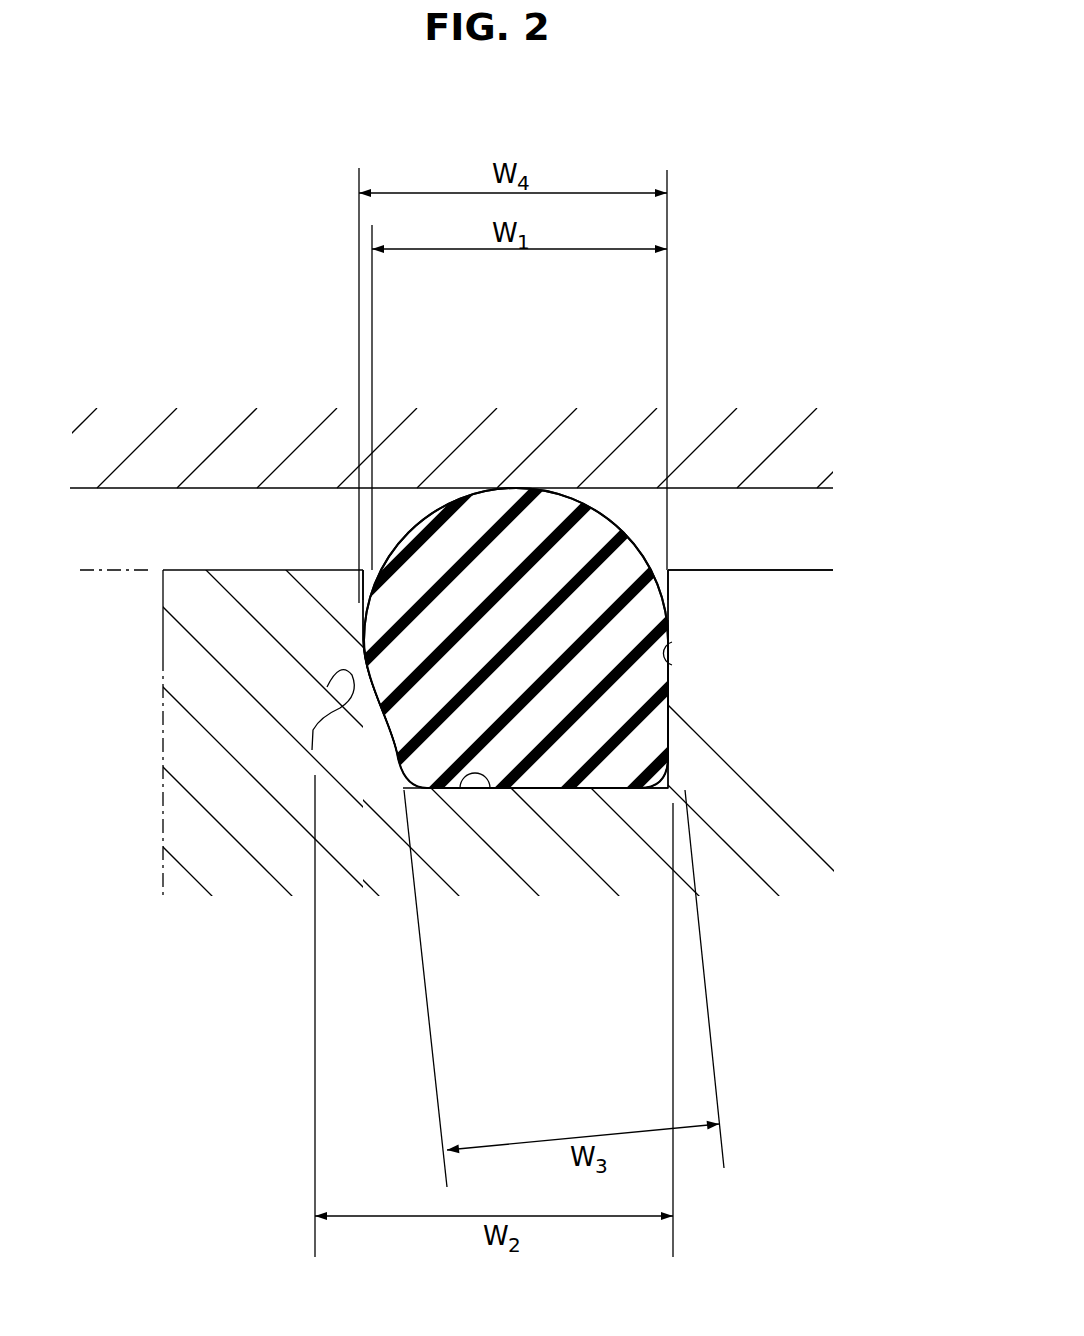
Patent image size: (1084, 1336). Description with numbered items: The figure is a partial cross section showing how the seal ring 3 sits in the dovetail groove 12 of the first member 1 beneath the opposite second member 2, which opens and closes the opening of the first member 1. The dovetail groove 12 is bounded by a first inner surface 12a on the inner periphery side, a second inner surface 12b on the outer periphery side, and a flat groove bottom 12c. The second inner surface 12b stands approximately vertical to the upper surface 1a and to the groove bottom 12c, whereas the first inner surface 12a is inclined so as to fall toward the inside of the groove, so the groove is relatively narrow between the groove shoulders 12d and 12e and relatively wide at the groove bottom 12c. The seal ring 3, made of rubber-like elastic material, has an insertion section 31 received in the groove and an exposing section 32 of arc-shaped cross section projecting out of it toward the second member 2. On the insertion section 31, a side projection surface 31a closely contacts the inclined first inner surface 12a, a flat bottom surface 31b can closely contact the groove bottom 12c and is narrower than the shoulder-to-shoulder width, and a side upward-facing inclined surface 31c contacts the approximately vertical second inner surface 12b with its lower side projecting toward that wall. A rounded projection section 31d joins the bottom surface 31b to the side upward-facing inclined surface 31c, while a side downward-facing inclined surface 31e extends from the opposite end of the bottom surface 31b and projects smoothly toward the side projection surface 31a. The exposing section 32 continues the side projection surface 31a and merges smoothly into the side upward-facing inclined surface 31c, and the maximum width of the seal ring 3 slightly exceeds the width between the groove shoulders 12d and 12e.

The first member 1 is at (780, 847).
The upper surface 1a is at (773, 568).
The second member 2 is at (297, 440).
The seal ring 3 is at (633, 530).
The dovetail groove 12 is at (360, 765).
The first inner surface 12a is at (307, 722).
The second inner surface 12b is at (673, 640).
The groove bottom 12c is at (476, 792).
The groove shoulder 12d is at (368, 572).
The groove shoulder 12e is at (683, 570).
The insertion section 31 is at (530, 713).
The side projection surface 31a is at (360, 637).
The bottom surface 31b is at (581, 792).
The side upward-facing inclined surface 31c is at (673, 693).
The projection section 31d is at (687, 792).
The side downward-facing inclined surface 31e is at (380, 722).
The exposing section 32 is at (495, 497).